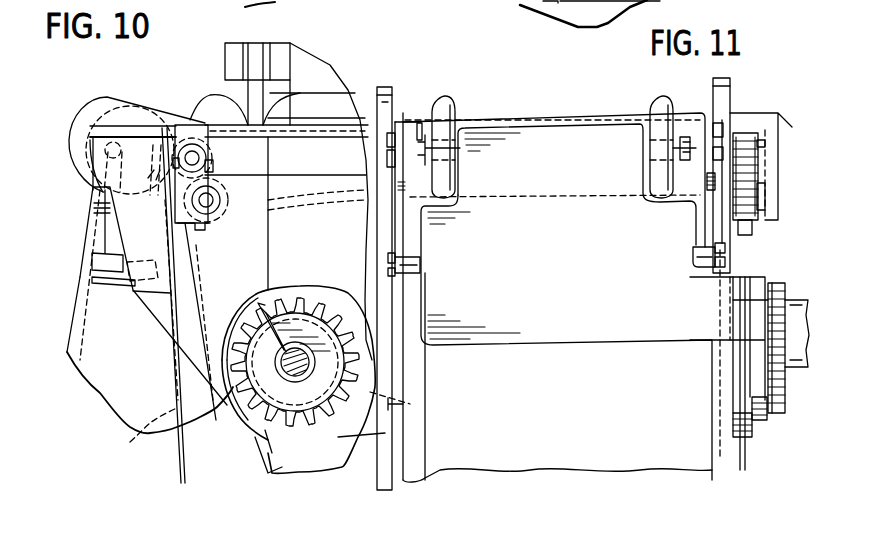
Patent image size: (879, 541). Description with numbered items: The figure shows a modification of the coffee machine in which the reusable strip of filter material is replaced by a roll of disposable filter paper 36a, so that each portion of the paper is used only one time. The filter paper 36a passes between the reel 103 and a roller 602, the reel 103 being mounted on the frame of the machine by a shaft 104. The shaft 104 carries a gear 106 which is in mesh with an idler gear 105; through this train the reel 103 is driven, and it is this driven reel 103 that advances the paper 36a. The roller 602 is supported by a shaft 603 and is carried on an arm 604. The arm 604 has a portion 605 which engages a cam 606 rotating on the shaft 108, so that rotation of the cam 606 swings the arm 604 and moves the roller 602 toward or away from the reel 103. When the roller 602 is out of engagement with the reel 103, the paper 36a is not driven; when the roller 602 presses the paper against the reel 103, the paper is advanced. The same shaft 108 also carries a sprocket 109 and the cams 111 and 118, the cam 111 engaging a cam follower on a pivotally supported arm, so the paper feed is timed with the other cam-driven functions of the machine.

In FIG. 10, the filter paper 36a is at (132, 442).
In FIG. 11, the filter paper 36a is at (690, 448).
In FIG. 10, the reel 103 is at (160, 140).
In FIG. 11, the reel 103 is at (713, 152).
In FIG. 10, the shaft 104 is at (192, 158).
In FIG. 10, the idler gear 105 is at (228, 200).
In FIG. 11, the idler gear 105 is at (752, 222).
In FIG. 10, the gear 106 is at (208, 164).
In FIG. 11, the gear 106 is at (748, 132).
In FIG. 10, the shaft 108 is at (315, 363).
In FIG. 10, the sprocket 109 is at (410, 404).
In FIG. 10, the cam 111 is at (312, 323).
In FIG. 10, the cam 118 is at (385, 433).
In FIG. 10, the roller 602 is at (80, 135).
In FIG. 11, the roller 602 is at (452, 112).
In FIG. 10, the shaft 603 is at (113, 150).
In FIG. 10, the arm 604 is at (95, 243).
In FIG. 11, the arm 604 is at (605, 276).
In FIG. 10, the portion 605 is at (112, 392).
In FIG. 11, the portion 605 is at (757, 383).
In FIG. 10, the cam 606 is at (262, 447).
In FIG. 11, the cam 606 is at (757, 420).